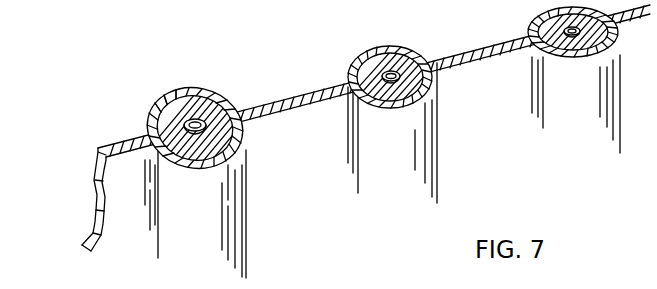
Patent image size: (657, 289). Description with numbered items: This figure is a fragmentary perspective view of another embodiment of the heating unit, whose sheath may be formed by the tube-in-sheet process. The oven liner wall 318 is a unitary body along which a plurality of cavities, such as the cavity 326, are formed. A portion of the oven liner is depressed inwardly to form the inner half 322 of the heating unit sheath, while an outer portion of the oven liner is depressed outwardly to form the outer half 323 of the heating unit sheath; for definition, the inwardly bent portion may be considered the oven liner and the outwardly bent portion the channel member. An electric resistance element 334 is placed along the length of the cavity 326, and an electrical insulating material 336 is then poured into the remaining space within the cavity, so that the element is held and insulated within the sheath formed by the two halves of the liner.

The oven liner wall 318 is at (123, 202).
The inner half of the heating unit sheath 322 is at (213, 117).
The outer half of the heating unit sheath 323 is at (240, 145).
The cavity 326 is at (208, 110).
The electric resistance element 334 is at (196, 121).
The electrical insulating material 336 is at (168, 107).